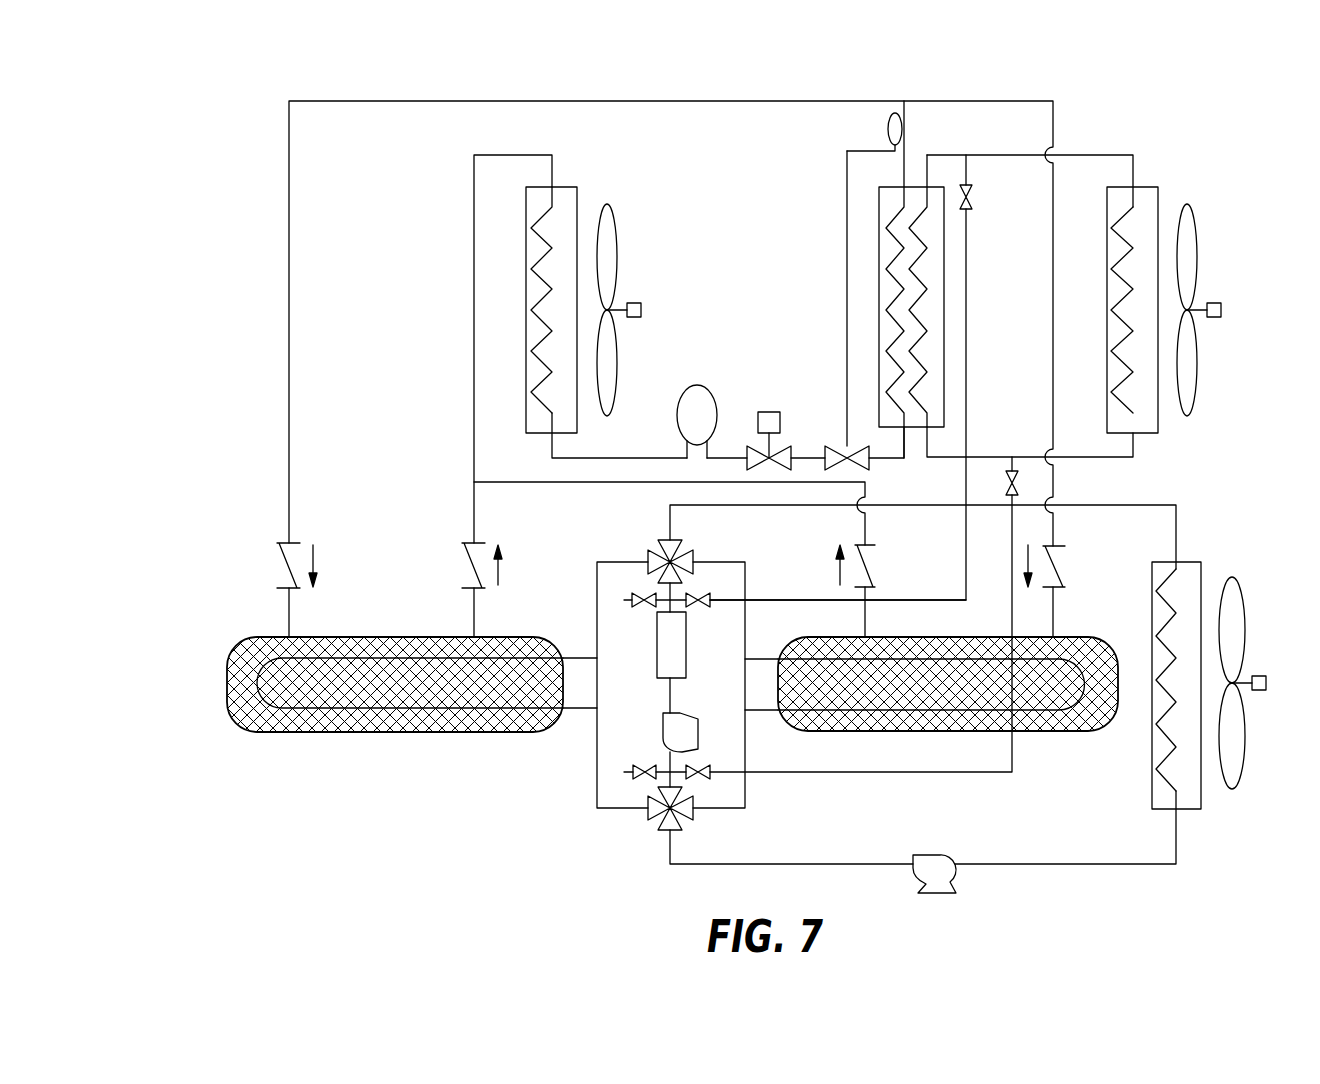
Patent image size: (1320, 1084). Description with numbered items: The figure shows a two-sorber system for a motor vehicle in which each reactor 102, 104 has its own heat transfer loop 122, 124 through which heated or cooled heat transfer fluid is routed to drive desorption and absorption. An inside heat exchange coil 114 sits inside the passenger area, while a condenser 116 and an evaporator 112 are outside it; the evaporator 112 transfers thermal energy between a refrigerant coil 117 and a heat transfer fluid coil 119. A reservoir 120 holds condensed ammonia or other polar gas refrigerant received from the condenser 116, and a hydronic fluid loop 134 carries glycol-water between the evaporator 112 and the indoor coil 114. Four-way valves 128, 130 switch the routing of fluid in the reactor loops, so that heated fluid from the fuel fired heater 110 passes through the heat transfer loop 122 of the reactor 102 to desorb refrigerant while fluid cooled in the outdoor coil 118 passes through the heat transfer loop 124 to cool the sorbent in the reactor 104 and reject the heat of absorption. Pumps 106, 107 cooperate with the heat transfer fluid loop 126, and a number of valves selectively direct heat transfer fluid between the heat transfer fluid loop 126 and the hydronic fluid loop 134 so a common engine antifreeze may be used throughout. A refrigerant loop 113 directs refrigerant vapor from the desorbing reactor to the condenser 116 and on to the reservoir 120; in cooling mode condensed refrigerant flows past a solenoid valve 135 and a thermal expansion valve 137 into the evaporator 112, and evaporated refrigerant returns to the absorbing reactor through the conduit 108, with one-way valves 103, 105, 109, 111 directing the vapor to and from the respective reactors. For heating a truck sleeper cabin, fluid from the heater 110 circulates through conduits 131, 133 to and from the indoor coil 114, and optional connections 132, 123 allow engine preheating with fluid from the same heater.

The reactor 102 is at (357, 635).
The one-way valve 103 is at (467, 566).
The reactor 104 is at (1086, 638).
The one-way valve 105 is at (282, 568).
The pump 106 is at (943, 855).
The pump 107 is at (663, 730).
The conduit 108 is at (380, 101).
The one-way valve 109 is at (868, 563).
The fuel fired heater 110 is at (687, 680).
The one-way valve 111 is at (1057, 562).
The evaporator 112 is at (879, 290).
The refrigerant loop 113 is at (473, 347).
The inside heat exchange coil 114 is at (1158, 187).
The condenser 116 is at (577, 187).
The refrigerant coil 117 is at (895, 335).
The outdoor coil 118 is at (1201, 562).
The heat transfer fluid coil 119 is at (923, 313).
The reservoir 120 is at (700, 384).
The heat transfer loop 122 is at (363, 708).
The optional connection 123 is at (626, 772).
The heat transfer loop 124 is at (1045, 712).
The heat transfer fluid loop 126 is at (1136, 505).
The four-way valve 128 is at (682, 828).
The four-way valve 130 is at (675, 543).
The conduit 131 is at (867, 772).
The optional connection 132 is at (630, 600).
The conduit 133 is at (966, 602).
The hydronic fluid loop 134 is at (1098, 155).
The solenoid valve 135 is at (763, 468).
The thermal expansion valve 137 is at (850, 466).